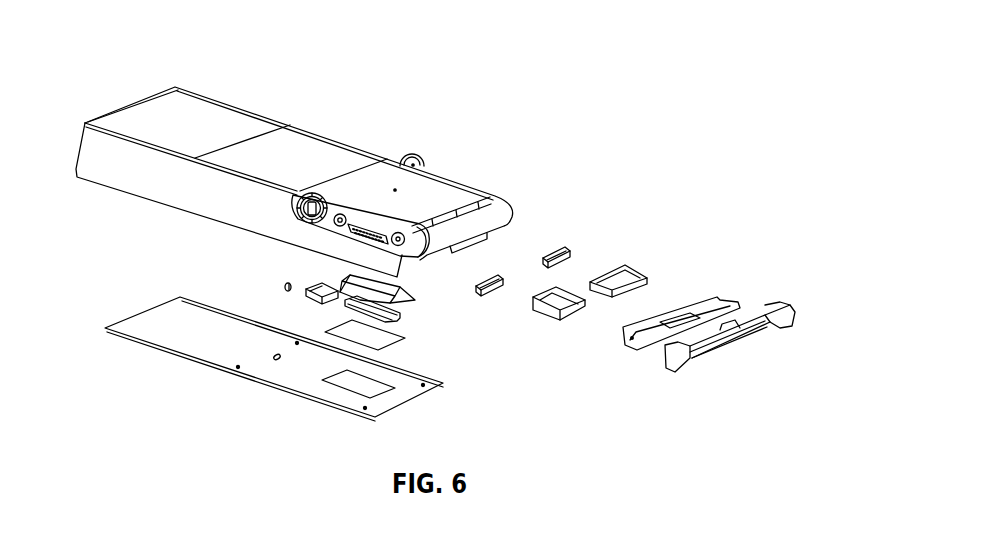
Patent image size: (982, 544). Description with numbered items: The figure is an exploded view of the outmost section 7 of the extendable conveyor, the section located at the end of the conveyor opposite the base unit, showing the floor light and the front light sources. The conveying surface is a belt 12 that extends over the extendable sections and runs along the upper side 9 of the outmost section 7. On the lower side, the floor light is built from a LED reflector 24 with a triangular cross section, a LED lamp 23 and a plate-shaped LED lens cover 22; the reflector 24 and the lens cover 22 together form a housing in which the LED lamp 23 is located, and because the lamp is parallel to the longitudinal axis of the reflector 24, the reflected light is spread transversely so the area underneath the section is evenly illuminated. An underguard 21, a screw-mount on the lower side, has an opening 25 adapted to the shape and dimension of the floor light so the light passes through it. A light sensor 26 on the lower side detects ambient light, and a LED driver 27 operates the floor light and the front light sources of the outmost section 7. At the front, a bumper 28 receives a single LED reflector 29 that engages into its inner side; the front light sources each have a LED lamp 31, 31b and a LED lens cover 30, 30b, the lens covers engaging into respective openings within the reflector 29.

The outmost section 7 is at (96, 158).
The upper side 9 is at (283, 90).
The belt 12 is at (183, 120).
The underguard 21 is at (394, 409).
The LED lens cover 22 is at (398, 340).
The LED lamp 23 is at (408, 318).
The LED reflector 24 is at (394, 290).
The opening 25 is at (357, 388).
The light sensor 26 is at (284, 289).
The LED driver 27 is at (312, 291).
The bumper 28 is at (785, 305).
The LED reflector 29 is at (730, 297).
The LED lens cover 30 is at (557, 303).
The LED lens cover 30b is at (614, 270).
The LED lamp 31 is at (500, 275).
The LED lamp 31b is at (556, 250).